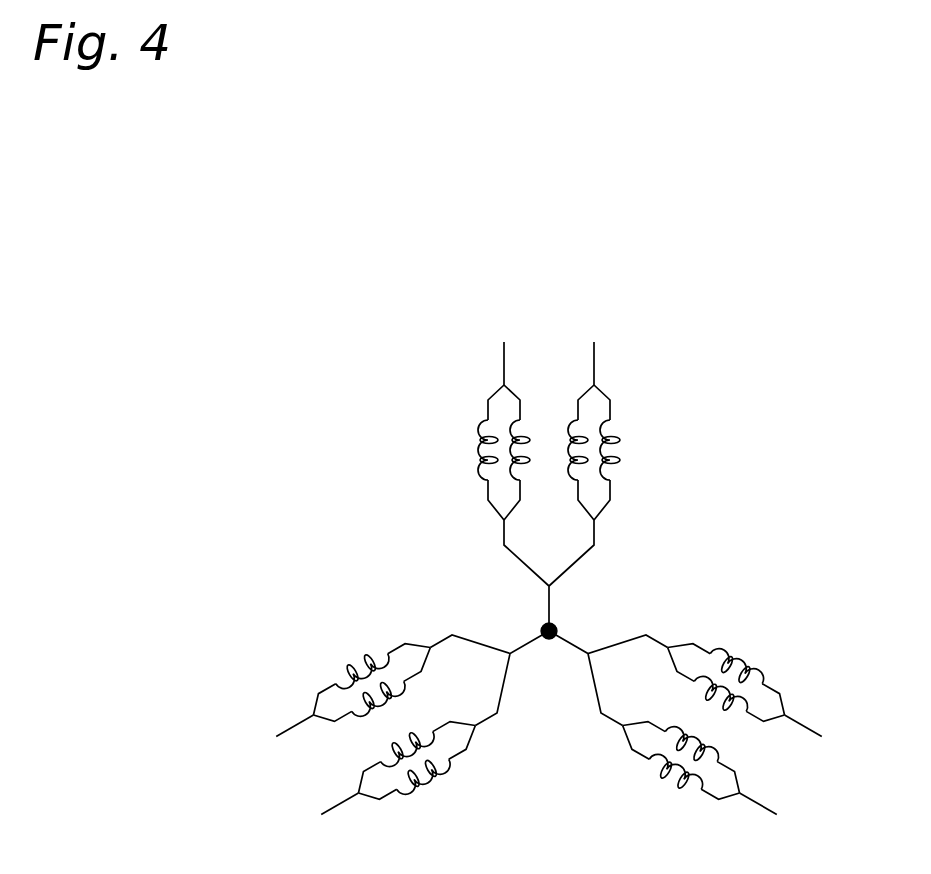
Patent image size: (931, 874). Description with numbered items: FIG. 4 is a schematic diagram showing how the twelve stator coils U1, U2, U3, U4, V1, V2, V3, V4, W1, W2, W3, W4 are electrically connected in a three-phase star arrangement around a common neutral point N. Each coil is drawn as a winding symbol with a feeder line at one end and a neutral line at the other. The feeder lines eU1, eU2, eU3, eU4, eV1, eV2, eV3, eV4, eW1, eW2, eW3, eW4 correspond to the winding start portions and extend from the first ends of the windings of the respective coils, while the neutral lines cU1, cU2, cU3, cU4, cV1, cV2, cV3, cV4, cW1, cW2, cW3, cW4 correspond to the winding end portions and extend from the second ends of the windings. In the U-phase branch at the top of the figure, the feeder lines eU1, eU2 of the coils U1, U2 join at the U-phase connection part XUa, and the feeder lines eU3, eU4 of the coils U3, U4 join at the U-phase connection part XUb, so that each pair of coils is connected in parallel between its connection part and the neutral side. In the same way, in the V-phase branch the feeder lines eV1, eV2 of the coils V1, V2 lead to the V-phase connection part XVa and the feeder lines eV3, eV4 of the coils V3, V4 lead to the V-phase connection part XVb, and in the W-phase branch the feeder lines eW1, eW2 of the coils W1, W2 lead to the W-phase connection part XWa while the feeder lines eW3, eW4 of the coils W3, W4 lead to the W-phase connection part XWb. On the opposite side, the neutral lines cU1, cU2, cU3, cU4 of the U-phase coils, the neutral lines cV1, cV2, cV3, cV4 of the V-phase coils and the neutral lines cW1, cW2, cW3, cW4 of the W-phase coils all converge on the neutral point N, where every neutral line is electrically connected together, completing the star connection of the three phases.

The neutral point N is at (533, 623).
The U-phase connection part XUa is at (509, 345).
The U-phase connection part XUb is at (601, 345).
The V-phase connection part XVa is at (826, 738).
The V-phase connection part XVb is at (782, 817).
The W-phase connection part XWa is at (322, 817).
The W-phase connection part XWb is at (272, 740).
The coil U1 is at (476, 440).
The coil U2 is at (523, 470).
The coil U3 is at (567, 443).
The coil U4 is at (617, 427).
The coil V1 is at (753, 662).
The coil V2 is at (710, 695).
The coil V3 is at (707, 737).
The coil V4 is at (680, 793).
The coil W1 is at (423, 795).
The coil W2 is at (407, 743).
The coil W3 is at (383, 705).
The coil W4 is at (352, 668).
The feeder line eU1 is at (493, 392).
The feeder line eU2 is at (513, 390).
The feeder line eU3 is at (585, 392).
The feeder line eU4 is at (602, 392).
The feeder line eV1 is at (787, 698).
The feeder line eV2 is at (780, 722).
The feeder line eV3 is at (747, 782).
The feeder line eV4 is at (733, 803).
The feeder line eW1 is at (368, 800).
The feeder line eW2 is at (355, 783).
The feeder line eW3 is at (322, 725).
The feeder line eW4 is at (315, 698).
The neutral line cU1 is at (490, 513).
The neutral line cU2 is at (512, 513).
The neutral line cU3 is at (587, 515).
The neutral line cU4 is at (603, 515).
The neutral line cV1 is at (678, 645).
The neutral line cV2 is at (667, 660).
The neutral line cV3 is at (633, 723).
The neutral line cV4 is at (623, 737).
The neutral line cW1 is at (473, 748).
The neutral line cW2 is at (465, 722).
The neutral line cW3 is at (428, 662).
The neutral line cW4 is at (418, 645).